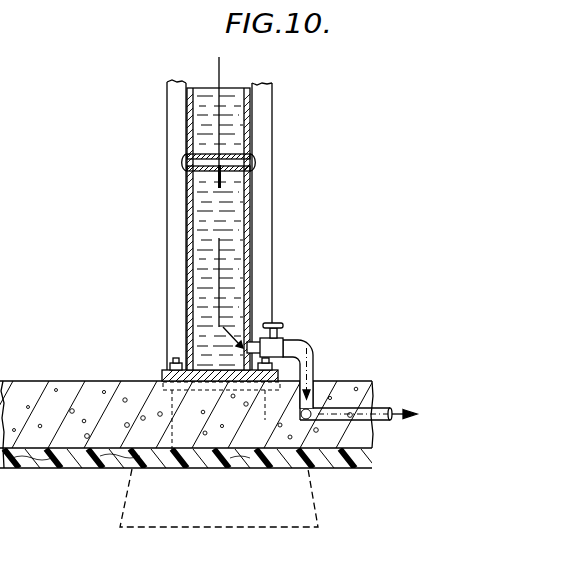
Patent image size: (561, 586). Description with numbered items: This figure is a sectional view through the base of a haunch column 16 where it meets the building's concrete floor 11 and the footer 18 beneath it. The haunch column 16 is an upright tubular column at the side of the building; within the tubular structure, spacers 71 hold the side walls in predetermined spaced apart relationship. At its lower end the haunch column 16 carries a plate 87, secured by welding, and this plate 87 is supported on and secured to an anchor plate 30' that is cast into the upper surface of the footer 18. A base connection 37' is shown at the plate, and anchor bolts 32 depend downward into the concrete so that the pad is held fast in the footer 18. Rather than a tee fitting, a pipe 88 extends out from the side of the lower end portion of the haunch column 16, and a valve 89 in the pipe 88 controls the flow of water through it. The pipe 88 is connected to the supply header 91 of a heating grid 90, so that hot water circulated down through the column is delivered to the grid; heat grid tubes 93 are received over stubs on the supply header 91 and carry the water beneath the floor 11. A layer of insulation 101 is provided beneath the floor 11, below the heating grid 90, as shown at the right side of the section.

The concrete floor 11 is at (80, 381).
The haunch column 16 is at (167, 203).
The footer 18 is at (310, 472).
The anchor plate 30' is at (194, 475).
The anchor bolt 32 is at (170, 453).
The base plate 37' is at (199, 398).
The spacer 71 is at (228, 156).
The plate 87 is at (207, 368).
The pipe 88 is at (300, 340).
The valve 89 is at (272, 323).
The heating grid 90 is at (351, 398).
The supply header 91 is at (318, 395).
The heat grid tube 93 is at (384, 407).
The layer of insulation 101 is at (372, 458).